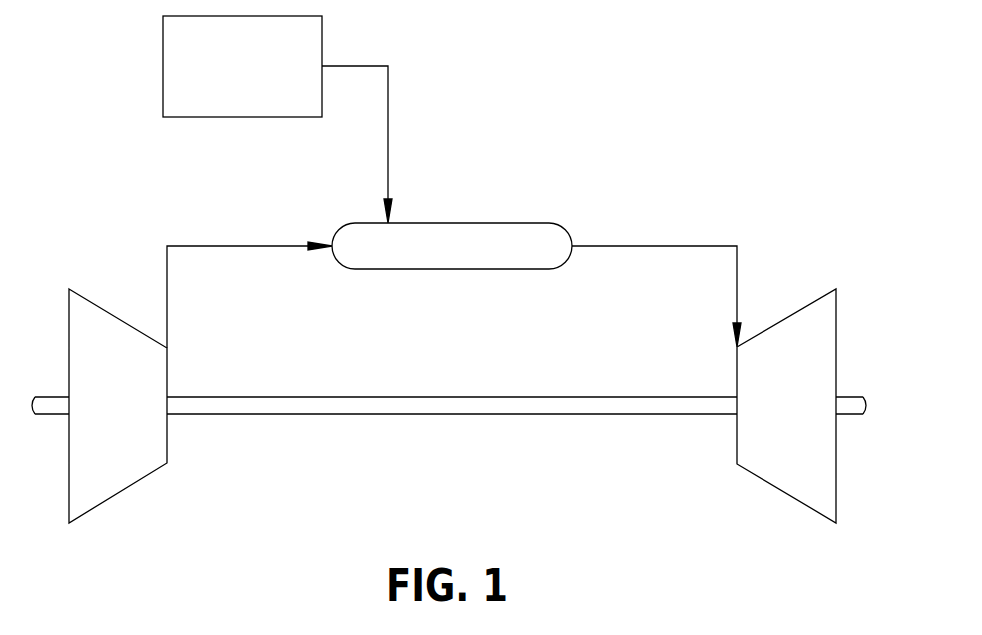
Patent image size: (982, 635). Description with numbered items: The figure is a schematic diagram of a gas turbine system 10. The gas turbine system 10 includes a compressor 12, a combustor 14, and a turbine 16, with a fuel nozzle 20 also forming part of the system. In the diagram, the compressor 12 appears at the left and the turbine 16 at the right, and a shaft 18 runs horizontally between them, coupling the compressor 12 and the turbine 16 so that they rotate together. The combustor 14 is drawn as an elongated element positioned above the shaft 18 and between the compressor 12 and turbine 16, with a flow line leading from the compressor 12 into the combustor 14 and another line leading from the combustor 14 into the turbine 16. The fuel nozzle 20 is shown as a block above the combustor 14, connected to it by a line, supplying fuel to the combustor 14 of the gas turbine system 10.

The gas turbine system 10 is at (745, 178).
The compressor 12 is at (118, 493).
The combustor 14 is at (465, 223).
The turbine 16 is at (836, 327).
The shaft 18 is at (451, 415).
The fuel nozzle 20 is at (322, 32).